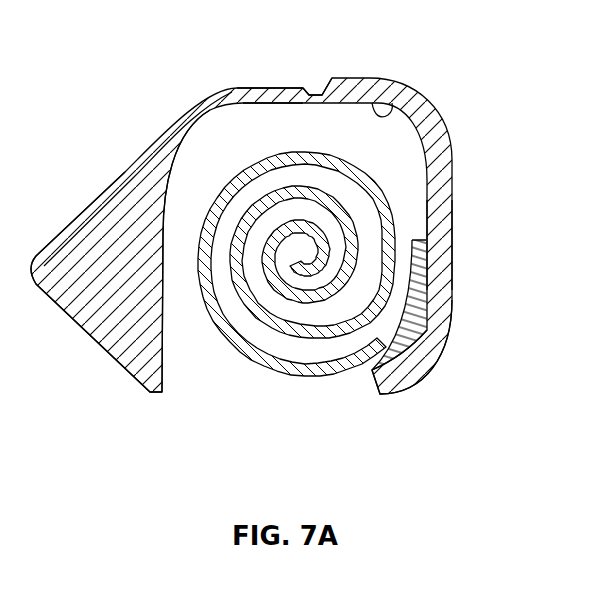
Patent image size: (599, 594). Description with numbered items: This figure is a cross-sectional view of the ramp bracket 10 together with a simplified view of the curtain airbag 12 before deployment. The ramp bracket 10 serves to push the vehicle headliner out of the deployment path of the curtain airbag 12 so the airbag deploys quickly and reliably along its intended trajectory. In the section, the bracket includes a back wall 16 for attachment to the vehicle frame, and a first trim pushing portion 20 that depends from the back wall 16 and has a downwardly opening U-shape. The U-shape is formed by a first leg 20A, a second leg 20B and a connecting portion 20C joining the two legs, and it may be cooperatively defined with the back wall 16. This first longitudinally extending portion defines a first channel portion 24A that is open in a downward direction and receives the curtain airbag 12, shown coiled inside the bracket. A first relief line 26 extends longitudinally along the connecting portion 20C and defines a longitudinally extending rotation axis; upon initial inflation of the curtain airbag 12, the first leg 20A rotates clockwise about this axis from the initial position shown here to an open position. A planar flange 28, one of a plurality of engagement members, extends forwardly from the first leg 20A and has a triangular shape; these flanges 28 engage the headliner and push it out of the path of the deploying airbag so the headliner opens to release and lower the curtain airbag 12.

The ramp bracket 10 is at (456, 97).
The first trim pushing portion 20 is at (460, 194).
The first leg 20A is at (163, 333).
The second leg 20B is at (453, 242).
The connecting portion 20C is at (293, 87).
The first relief line 26 is at (326, 88).
The first channel portion 24A is at (387, 108).
The planar flange 28 is at (75, 247).
The curtain airbag 12 is at (420, 247).
The back wall 16 is at (453, 286).